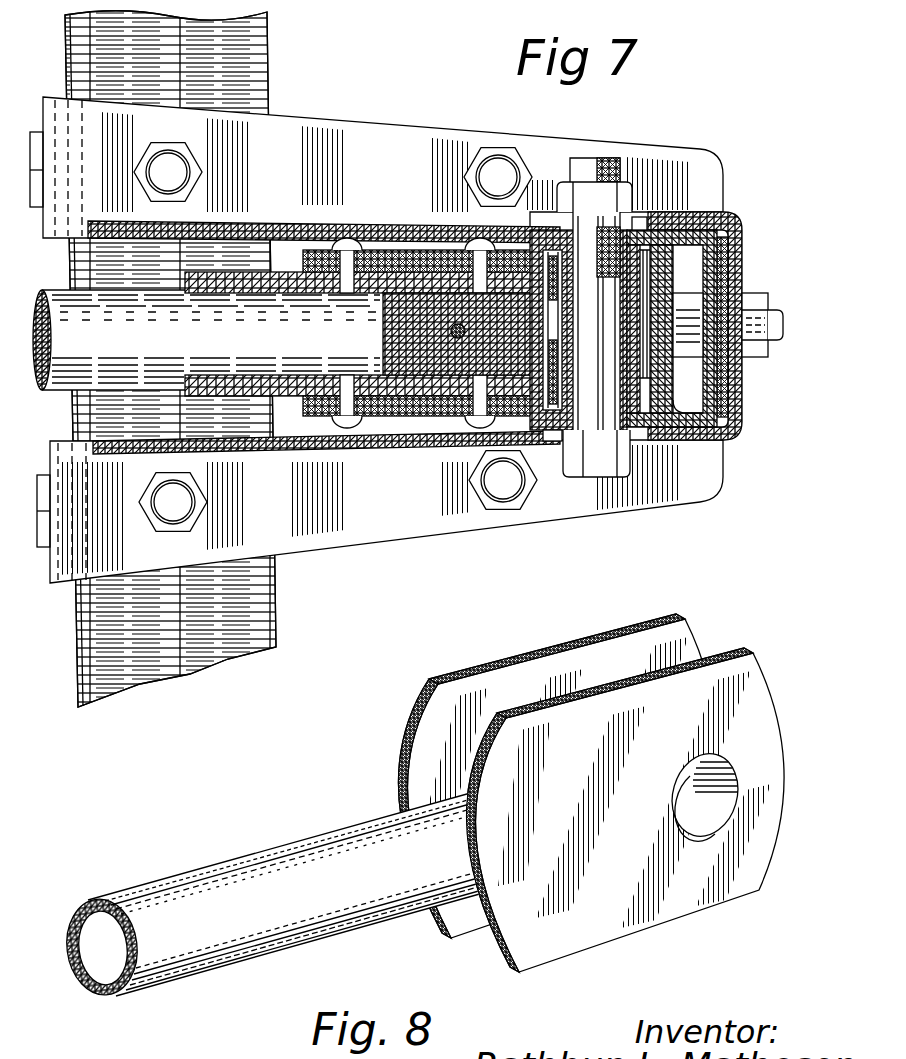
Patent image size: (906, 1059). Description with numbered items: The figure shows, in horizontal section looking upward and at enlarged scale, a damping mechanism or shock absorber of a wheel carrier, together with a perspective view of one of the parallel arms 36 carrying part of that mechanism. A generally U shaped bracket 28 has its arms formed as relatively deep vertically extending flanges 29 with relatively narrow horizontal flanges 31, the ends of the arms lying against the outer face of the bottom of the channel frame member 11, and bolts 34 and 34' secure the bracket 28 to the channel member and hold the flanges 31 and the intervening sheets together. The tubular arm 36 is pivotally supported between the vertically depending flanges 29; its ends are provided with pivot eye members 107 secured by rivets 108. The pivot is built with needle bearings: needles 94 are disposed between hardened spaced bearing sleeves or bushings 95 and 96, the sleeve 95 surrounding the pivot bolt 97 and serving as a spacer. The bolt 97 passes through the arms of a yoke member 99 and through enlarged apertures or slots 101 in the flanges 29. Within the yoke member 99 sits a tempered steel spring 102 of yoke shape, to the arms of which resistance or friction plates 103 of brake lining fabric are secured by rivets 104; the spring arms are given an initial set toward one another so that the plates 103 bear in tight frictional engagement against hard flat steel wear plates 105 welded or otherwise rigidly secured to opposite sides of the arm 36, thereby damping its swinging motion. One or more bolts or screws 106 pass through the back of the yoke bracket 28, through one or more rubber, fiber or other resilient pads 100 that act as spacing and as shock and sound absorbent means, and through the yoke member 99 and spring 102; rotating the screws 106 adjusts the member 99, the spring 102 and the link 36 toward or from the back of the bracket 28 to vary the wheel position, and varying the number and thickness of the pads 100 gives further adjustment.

In FIG. 7, the channel frame member 11 is at (268, 30).
In FIG. 7, the horizontal flanges 31 is at (350, 140).
In FIG. 7, the bolts 34 is at (191, 325).
In FIG. 7, the bolts 34' is at (509, 334).
In FIG. 7, the vertically extending flanges 29 is at (318, 222).
In FIG. 7, the rivets 104 is at (348, 243).
In FIG. 7, the friction plates 103 is at (395, 255).
In FIG. 7, the wear plates 105 is at (297, 285).
In FIG. 8, the wear plates 105 is at (550, 668).
In FIG. 7, the arm 36 is at (98, 335).
In FIG. 8, the arm 36 is at (200, 870).
In FIG. 7, the rivets 108 is at (451, 332).
In FIG. 7, the pivot eye members 107 is at (385, 357).
In FIG. 8, the pivot eye members 107 is at (728, 782).
In FIG. 7, the slots 101 is at (648, 216).
In FIG. 7, the yoke member 99 is at (720, 213).
In FIG. 7, the bracket 28 is at (674, 348).
In FIG. 7, the spring 102 is at (738, 262).
In FIG. 7, the bolts or screws 106 is at (780, 312).
In FIG. 7, the bearing sleeve 96 is at (566, 298).
In FIG. 7, the needles 94 is at (562, 317).
In FIG. 7, the bearing sleeve 95 is at (566, 341).
In FIG. 7, the resilient pads 100 is at (722, 383).
In FIG. 7, the pivot bolt 97 is at (630, 472).